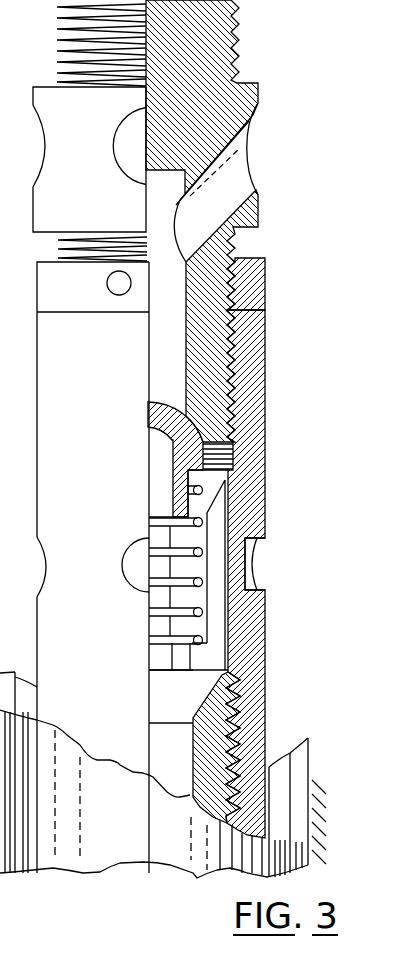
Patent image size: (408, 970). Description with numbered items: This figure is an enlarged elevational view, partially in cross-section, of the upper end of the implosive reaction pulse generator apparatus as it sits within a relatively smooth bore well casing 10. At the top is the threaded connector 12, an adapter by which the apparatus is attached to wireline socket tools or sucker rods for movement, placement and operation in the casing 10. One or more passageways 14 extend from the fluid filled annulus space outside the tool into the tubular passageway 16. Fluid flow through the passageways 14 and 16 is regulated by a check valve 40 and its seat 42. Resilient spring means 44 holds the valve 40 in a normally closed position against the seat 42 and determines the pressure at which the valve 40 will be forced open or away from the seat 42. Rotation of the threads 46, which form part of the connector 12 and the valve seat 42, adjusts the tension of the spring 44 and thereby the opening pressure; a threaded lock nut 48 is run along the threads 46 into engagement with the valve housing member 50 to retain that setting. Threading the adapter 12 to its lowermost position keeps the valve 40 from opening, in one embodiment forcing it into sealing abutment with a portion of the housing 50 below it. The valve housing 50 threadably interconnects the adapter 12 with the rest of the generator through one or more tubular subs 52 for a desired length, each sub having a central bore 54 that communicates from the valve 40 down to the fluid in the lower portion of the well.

The well casing 10 is at (62, 865).
The threaded connector 12 is at (240, 28).
The passageway 14 is at (242, 173).
The tubular passageway 16 is at (162, 330).
The check valve 40 is at (157, 415).
The valve seat 42 is at (200, 427).
The resilient spring means 44 is at (162, 612).
The threads 46 is at (230, 373).
The threaded lock nut 48 is at (255, 280).
The valve housing member 50 is at (257, 520).
The tubular sub 52 is at (247, 705).
The central bore 54 is at (165, 748).